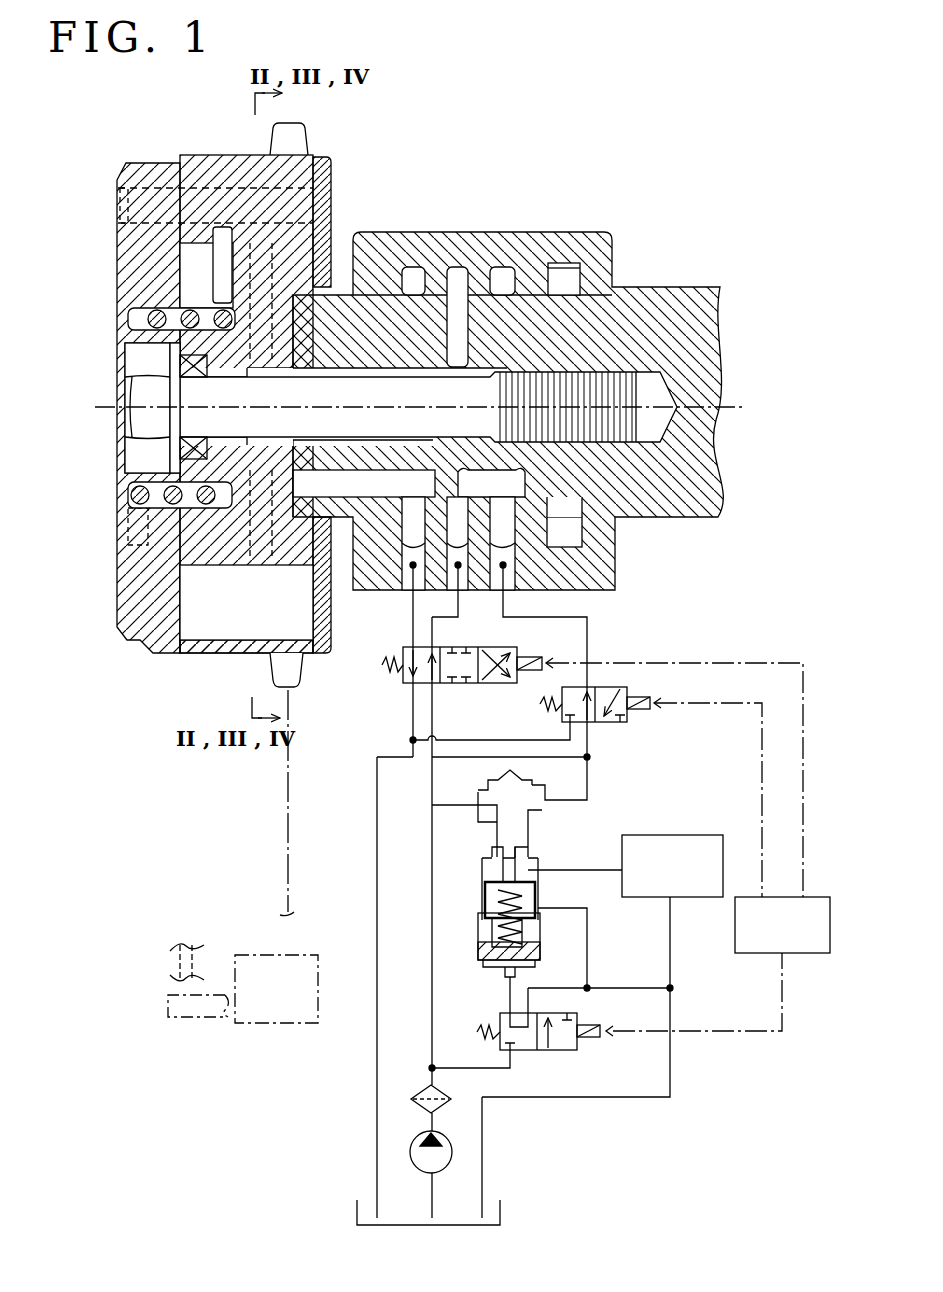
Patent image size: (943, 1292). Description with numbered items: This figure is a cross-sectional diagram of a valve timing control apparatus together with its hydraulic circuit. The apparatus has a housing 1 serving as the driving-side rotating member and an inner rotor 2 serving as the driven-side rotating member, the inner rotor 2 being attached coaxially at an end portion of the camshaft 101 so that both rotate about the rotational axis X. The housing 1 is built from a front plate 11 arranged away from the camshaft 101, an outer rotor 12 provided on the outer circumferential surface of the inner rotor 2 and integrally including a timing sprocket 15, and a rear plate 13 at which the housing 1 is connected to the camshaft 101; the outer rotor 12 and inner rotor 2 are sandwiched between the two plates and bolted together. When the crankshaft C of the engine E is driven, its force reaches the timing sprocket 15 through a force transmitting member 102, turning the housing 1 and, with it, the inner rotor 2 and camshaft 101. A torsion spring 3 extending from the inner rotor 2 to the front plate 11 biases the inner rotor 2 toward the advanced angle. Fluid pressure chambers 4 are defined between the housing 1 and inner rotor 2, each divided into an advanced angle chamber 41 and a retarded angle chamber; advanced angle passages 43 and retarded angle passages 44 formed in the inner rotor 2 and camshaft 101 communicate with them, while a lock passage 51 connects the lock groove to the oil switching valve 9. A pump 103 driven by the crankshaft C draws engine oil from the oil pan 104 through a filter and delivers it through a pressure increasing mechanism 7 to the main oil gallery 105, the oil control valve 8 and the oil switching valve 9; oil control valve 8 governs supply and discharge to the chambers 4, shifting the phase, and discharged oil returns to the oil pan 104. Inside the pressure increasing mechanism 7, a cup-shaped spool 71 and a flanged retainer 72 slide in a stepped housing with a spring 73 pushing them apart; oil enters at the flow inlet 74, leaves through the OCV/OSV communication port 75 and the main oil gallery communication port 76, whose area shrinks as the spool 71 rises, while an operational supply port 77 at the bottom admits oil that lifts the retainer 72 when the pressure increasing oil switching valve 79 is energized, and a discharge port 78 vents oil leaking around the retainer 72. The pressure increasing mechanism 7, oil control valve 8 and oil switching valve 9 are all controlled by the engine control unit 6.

The housing 1 is at (424, 414).
The inner rotor 2 is at (253, 406).
The torsion spring 3 is at (130, 313).
The fluid pressure chamber 4 is at (241, 662).
The advanced angle chamber 41 is at (207, 620).
The retarded angle passage 44 is at (223, 569).
The engine control unit 6 is at (805, 953).
The pressure increasing mechanism 7 is at (501, 913).
The oil control valve 8 is at (468, 685).
The oil switching valve 9 is at (612, 725).
The front plate 11 is at (118, 627).
The outer rotor 12 is at (220, 155).
The rear plate 13 is at (331, 185).
The timing sprocket 15 is at (302, 672).
The advanced angle passage 43 is at (462, 590).
The lock passage 51 is at (508, 590).
The spool 71 is at (492, 882).
The retainer 72 is at (478, 955).
The spring 73 is at (490, 900).
The flow inlet 74 is at (478, 788).
The OCV/OSV communication port 75 is at (540, 812).
The main oil gallery communication port 76 is at (528, 862).
The operational supply port 77 is at (505, 970).
The discharge port 78 is at (545, 908).
The pressure increasing oil switching valve 79 is at (560, 1052).
The camshaft 101 is at (485, 437).
The force transmitting member 102 is at (288, 814).
The pump 103 is at (452, 1150).
The oil pan 104 is at (355, 1212).
The main oil gallery 105 is at (690, 835).
The rotational axis X is at (429, 407).
The crankshaft C is at (183, 1018).
The engine E is at (318, 1010).